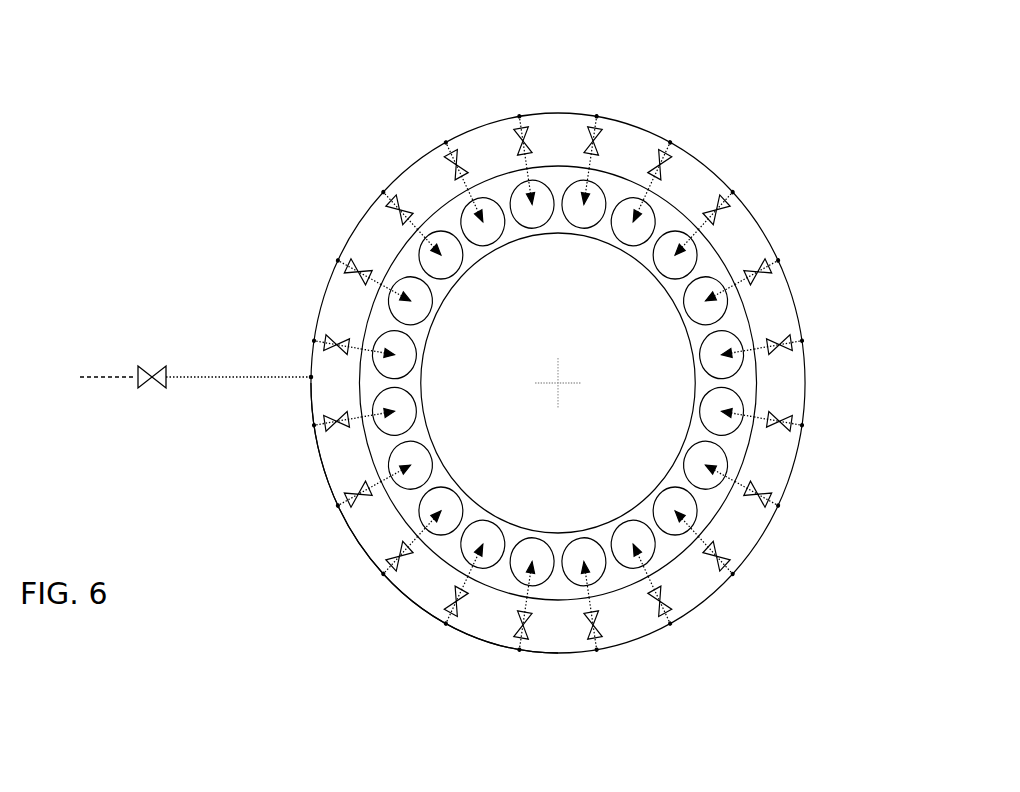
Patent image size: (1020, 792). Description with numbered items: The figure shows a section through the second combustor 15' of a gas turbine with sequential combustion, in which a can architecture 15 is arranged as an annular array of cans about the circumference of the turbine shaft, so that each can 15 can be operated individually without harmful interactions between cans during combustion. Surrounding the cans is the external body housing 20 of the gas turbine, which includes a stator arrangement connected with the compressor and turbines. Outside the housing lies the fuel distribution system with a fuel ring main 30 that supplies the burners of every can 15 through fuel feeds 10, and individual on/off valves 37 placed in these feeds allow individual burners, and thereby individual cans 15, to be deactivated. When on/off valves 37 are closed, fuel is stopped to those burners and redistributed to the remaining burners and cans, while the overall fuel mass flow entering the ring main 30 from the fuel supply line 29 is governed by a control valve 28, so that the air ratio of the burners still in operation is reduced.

The fuel feed 10 is at (372, 205).
The can 15 is at (759, 207).
The second combustor 15' is at (712, 618).
The external body housing 20 is at (623, 173).
The control valve 28 is at (152, 377).
The inlet line 29 is at (181, 377).
The fuel ring main 30 is at (405, 598).
The on/off valve 37 is at (762, 268).